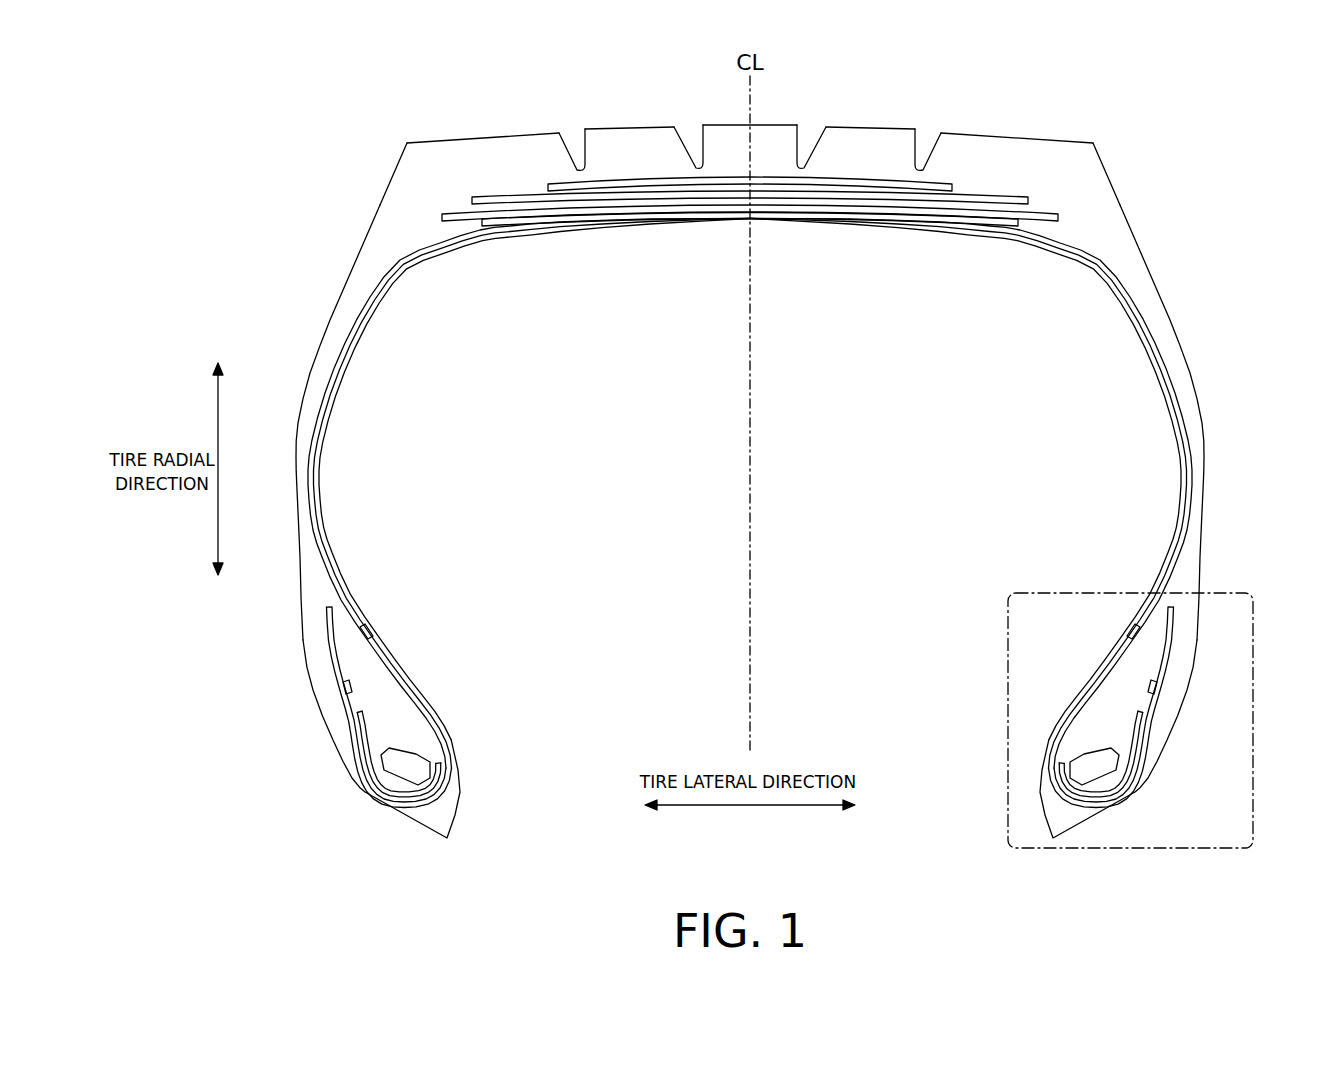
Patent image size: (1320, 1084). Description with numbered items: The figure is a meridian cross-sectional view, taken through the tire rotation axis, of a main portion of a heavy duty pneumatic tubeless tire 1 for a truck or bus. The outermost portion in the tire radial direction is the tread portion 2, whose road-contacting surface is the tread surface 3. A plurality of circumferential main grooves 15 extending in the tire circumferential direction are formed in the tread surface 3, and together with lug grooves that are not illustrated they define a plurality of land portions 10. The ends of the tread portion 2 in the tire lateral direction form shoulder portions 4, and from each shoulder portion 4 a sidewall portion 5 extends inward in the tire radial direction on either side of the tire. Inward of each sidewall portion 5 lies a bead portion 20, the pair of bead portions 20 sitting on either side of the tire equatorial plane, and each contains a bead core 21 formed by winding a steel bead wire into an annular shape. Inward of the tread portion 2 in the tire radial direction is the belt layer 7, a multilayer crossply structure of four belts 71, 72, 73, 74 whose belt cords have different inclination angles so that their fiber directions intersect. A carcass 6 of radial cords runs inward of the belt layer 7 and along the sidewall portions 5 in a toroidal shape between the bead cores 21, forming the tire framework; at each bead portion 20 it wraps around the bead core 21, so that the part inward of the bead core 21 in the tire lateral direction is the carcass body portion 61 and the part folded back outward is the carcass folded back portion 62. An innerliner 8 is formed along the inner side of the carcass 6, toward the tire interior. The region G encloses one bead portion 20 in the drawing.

The tire 1 is at (1168, 116).
The tread portion 2 is at (895, 140).
The tread surface 3 is at (871, 126).
The shoulder portion 4 is at (406, 144).
The sidewall portion 5 is at (296, 451).
The carcass 6 is at (1095, 275).
The belt layer 7 is at (750, 252).
The innerliner 8 is at (1168, 397).
The land portion 10 is at (495, 137).
The circumferential main groove 15 is at (566, 147).
The bead portion 20 is at (322, 716).
The bead core 21 is at (395, 763).
The carcass body portion 61 is at (400, 677).
The carcass folded back portion 62 is at (345, 690).
The belt 71 is at (883, 287).
The belt 72 is at (962, 209).
The belt 73 is at (925, 200).
The belt 74 is at (897, 190).
The bead region G is at (1256, 616).